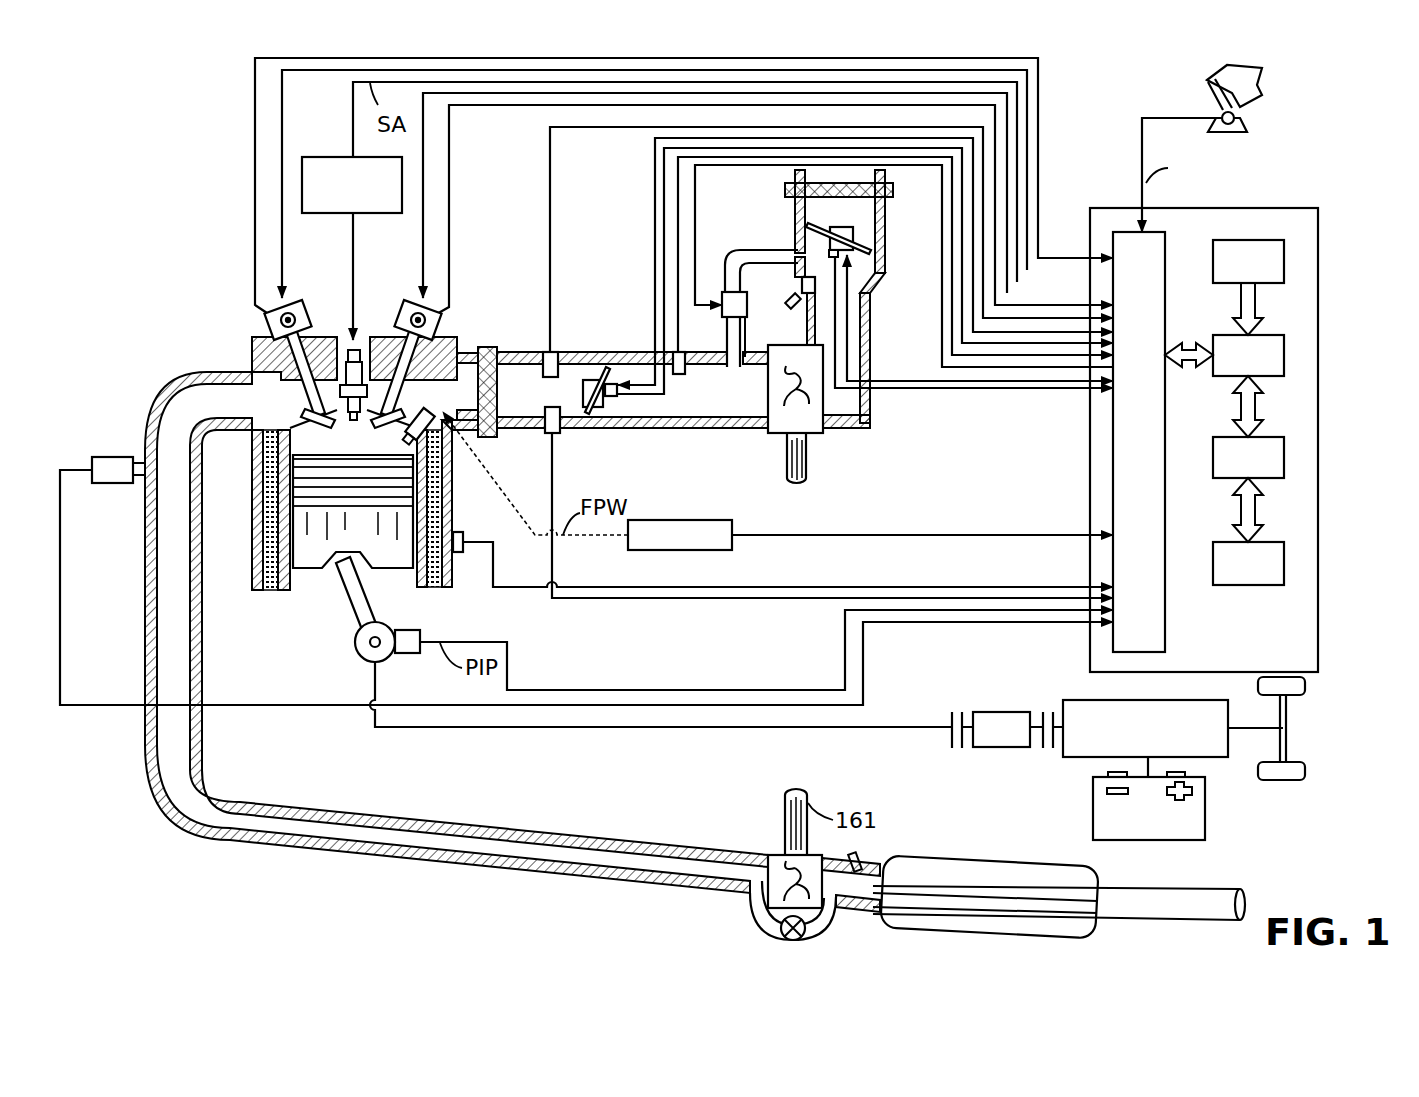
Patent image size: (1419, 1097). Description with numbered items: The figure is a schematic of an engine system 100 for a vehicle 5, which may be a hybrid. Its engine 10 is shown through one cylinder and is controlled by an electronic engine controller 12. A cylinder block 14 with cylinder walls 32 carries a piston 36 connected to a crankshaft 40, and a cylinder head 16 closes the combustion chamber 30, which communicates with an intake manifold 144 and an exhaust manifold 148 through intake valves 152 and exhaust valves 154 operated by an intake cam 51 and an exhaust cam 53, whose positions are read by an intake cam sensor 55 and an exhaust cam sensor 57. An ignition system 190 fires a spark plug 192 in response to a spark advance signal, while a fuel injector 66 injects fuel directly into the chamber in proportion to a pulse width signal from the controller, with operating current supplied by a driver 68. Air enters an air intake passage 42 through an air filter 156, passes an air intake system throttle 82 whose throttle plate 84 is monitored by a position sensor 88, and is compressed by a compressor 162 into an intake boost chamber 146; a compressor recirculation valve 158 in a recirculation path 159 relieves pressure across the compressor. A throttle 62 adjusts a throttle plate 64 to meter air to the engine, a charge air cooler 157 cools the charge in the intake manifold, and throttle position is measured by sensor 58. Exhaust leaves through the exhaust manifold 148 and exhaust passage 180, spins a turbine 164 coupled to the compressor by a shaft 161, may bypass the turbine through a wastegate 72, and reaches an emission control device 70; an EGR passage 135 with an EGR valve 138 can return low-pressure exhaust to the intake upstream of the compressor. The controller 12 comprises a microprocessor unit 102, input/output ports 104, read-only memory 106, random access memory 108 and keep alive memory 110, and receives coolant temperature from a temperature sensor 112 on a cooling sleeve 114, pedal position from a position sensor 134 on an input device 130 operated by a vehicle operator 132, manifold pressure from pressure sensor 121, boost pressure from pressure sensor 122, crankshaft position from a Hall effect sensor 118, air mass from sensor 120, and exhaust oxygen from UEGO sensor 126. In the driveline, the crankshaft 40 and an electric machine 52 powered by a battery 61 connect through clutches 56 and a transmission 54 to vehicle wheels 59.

The vehicle 5 is at (1330, 715).
The engine 10 is at (180, 270).
The electronic engine controller 12 is at (1307, 208).
The cylinder block 14 is at (247, 488).
The cylinder head 16 is at (468, 337).
The combustion chamber 30 is at (252, 548).
The cylinder walls 32 is at (300, 578).
The piston 36 is at (335, 540).
The crankshaft 40 is at (362, 663).
The air intake passage 42 is at (840, 296).
The intake cam 51 is at (407, 310).
The electric machine 52 is at (1000, 747).
The exhaust cam 53 is at (278, 322).
The transmission 54 is at (1205, 757).
The intake cam sensor 55 is at (430, 320).
The clutch 56 is at (955, 712).
The exhaust cam sensor 57 is at (270, 325).
The throttle position sensor 58 is at (615, 400).
The vehicle wheels 59 is at (1283, 780).
The battery 61 is at (1143, 840).
The throttle 62 is at (600, 367).
The throttle plate 64 is at (606, 366).
The fuel injector 66 is at (430, 440).
The driver 68 is at (713, 520).
The emission control device 70 is at (883, 930).
The wastegate 72 is at (780, 928).
The air intake system throttle 82 is at (830, 247).
The throttle plate 84 is at (808, 225).
The position sensor 88 is at (806, 247).
The engine system 100 is at (105, 118).
The microprocessor unit 102 is at (1285, 355).
The input/output ports 104 is at (1168, 236).
The read-only memory 106 is at (1285, 260).
The random access memory 108 is at (1285, 455).
The keep alive memory 110 is at (1285, 560).
The temperature sensor 112 is at (463, 537).
The cooling sleeve 114 is at (450, 575).
The Hall effect sensor 118 is at (402, 653).
The air mass sensor 120 is at (560, 430).
The pressure sensor 121 is at (551, 350).
The pressure sensor 122 is at (682, 352).
The UEGO sensor 126 is at (92, 465).
The input device 130 is at (1215, 95).
The vehicle operator 132 is at (1258, 82).
The position sensor 134 is at (1245, 120).
The EGR passage 135 is at (806, 307).
The EGR valve 138 is at (802, 283).
The intake manifold 144 is at (632, 390).
The intake boost chamber 146 is at (771, 390).
The exhaust manifold 148 is at (456, 632).
The intake valves 152 is at (393, 407).
The exhaust valves 154 is at (293, 383).
The air filter 156 is at (893, 190).
The charge air cooler 157 is at (492, 437).
The compressor recirculation valve 158 is at (723, 292).
The compressor recirculation path 159 is at (752, 337).
The shaft 161 is at (807, 463).
The compressor 162 is at (822, 433).
The turbine 164 is at (770, 853).
The exhaust system 180 is at (400, 880).
The ignition system 190 is at (340, 157).
The spark plug 192 is at (368, 337).